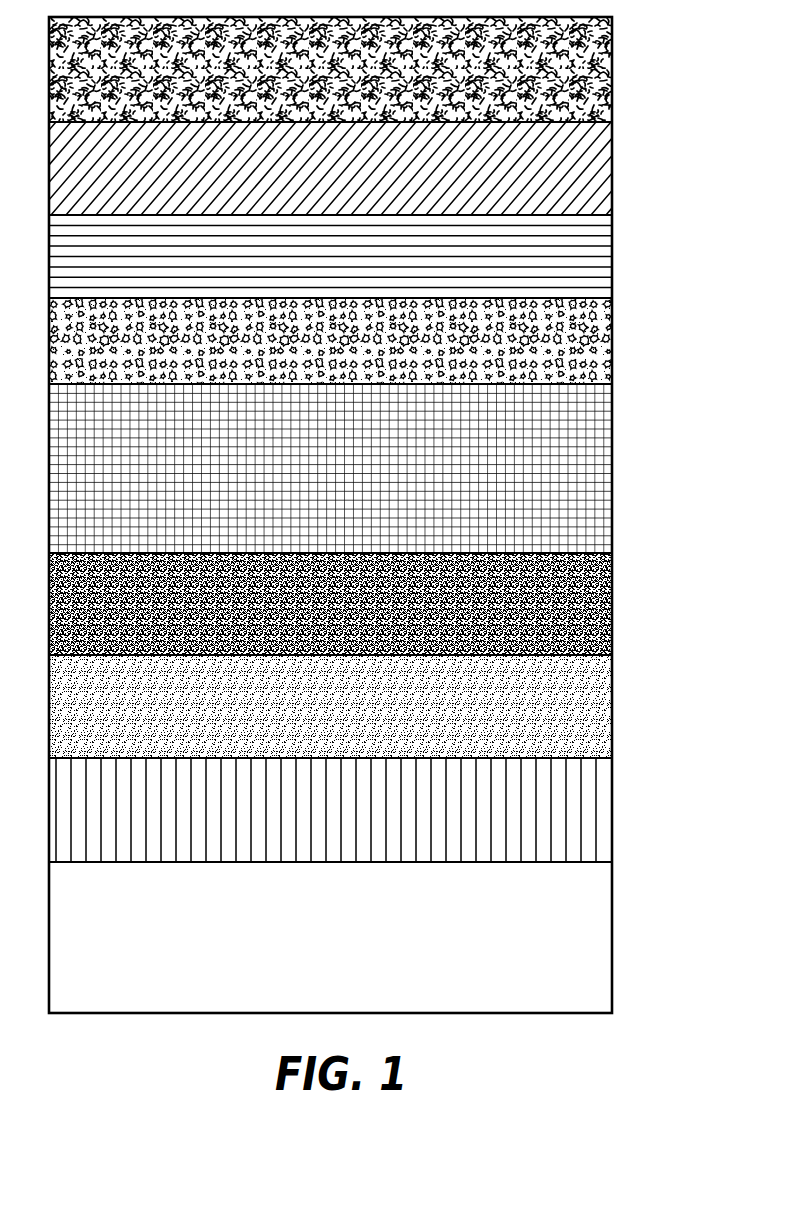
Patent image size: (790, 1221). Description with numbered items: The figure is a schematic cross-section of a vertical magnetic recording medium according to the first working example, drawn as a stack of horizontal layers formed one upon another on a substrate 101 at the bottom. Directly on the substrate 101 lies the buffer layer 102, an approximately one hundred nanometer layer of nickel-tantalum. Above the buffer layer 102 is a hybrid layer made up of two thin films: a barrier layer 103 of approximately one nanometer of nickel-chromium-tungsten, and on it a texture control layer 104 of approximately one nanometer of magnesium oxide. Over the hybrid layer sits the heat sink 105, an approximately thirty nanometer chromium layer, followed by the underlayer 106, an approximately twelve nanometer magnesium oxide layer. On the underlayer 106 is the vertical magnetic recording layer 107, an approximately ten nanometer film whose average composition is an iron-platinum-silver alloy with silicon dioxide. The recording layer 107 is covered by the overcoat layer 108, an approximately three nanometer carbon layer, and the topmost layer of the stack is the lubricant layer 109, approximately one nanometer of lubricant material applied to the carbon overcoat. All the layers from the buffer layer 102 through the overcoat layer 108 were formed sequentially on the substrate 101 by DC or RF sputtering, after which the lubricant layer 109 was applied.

The substrate 101 is at (612, 919).
The buffer layer 102 is at (612, 802).
The barrier layer 103 is at (612, 699).
The texture control layer 104 is at (612, 590).
The heat sink 105 is at (612, 469).
The underlayer 106 is at (612, 339).
The vertical magnetic recording layer 107 is at (612, 254).
The overcoat layer 108 is at (612, 159).
The lubricant layer 109 is at (612, 67).